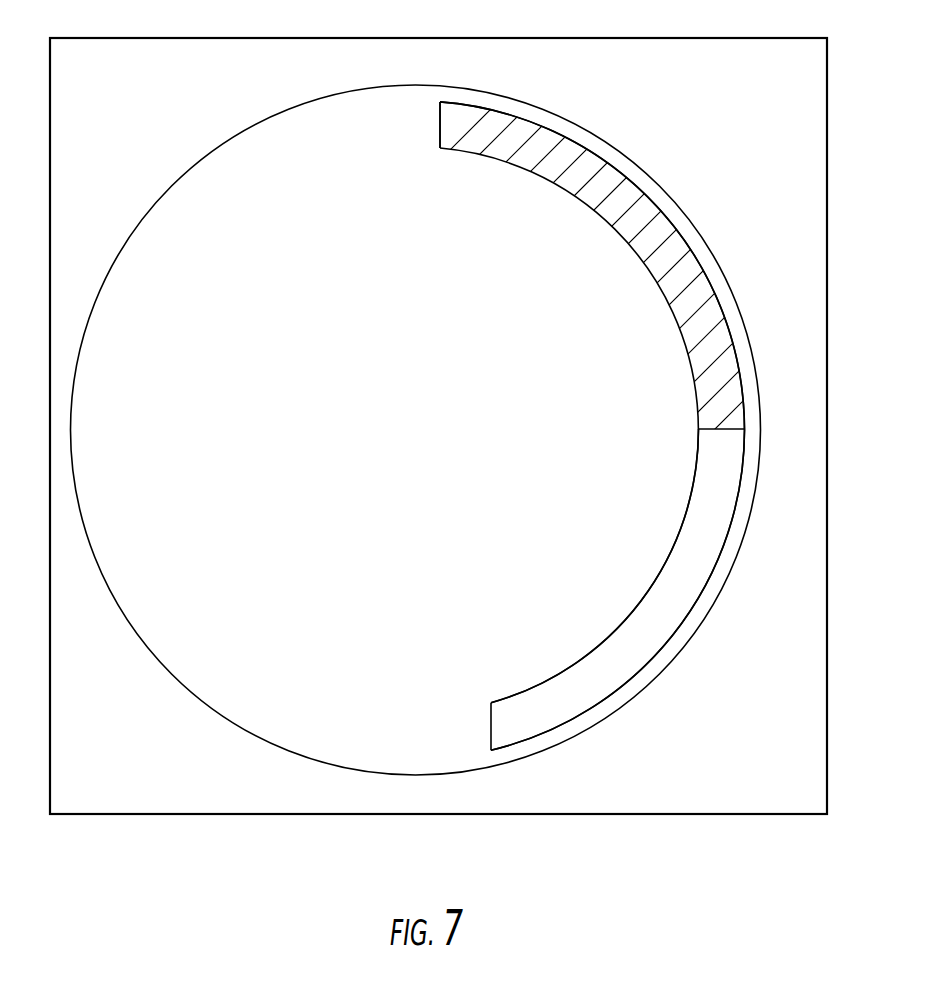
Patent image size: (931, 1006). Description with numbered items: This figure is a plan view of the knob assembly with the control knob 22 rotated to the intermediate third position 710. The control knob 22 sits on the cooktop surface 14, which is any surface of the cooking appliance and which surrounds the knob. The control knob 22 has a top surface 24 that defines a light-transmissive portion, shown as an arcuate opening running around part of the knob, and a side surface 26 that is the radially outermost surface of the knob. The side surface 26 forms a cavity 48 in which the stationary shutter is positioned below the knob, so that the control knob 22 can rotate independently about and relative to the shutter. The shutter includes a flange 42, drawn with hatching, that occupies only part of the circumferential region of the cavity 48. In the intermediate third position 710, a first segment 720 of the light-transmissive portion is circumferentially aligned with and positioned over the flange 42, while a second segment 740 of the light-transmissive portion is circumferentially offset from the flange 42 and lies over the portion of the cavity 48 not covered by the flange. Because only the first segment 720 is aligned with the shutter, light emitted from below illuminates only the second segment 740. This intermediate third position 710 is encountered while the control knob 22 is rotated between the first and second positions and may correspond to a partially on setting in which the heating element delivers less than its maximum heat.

The cooktop surface 14 is at (777, 748).
The control knob 22 is at (195, 712).
The top surface 24 is at (435, 521).
The side surface 26 is at (434, 141).
The flange 42 is at (600, 231).
The cavity 48 is at (602, 658).
The intermediate third position 710 is at (637, 770).
The first segment 720 is at (694, 224).
The second segment 740 is at (741, 481).